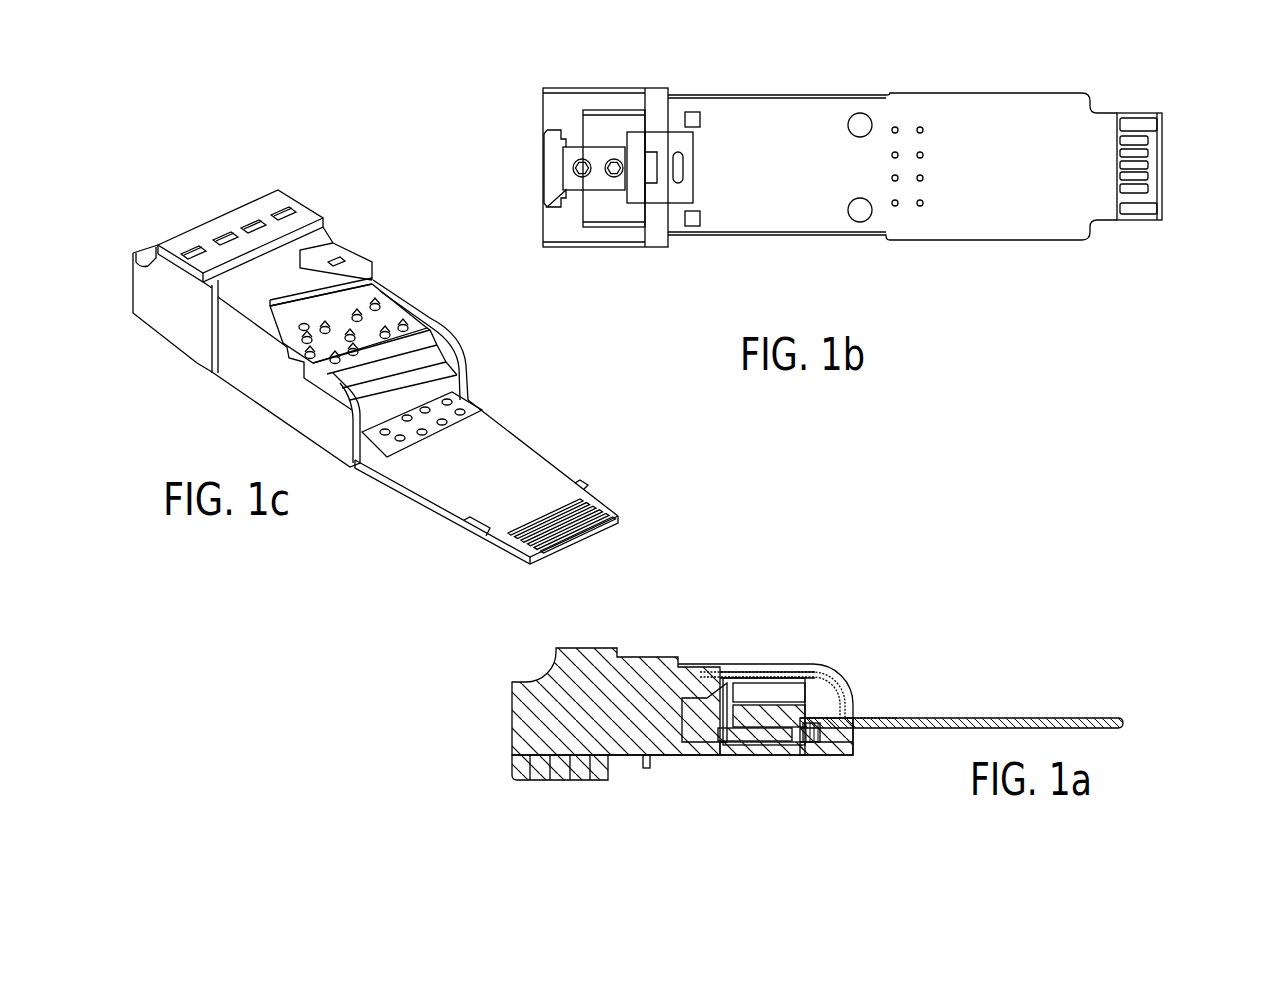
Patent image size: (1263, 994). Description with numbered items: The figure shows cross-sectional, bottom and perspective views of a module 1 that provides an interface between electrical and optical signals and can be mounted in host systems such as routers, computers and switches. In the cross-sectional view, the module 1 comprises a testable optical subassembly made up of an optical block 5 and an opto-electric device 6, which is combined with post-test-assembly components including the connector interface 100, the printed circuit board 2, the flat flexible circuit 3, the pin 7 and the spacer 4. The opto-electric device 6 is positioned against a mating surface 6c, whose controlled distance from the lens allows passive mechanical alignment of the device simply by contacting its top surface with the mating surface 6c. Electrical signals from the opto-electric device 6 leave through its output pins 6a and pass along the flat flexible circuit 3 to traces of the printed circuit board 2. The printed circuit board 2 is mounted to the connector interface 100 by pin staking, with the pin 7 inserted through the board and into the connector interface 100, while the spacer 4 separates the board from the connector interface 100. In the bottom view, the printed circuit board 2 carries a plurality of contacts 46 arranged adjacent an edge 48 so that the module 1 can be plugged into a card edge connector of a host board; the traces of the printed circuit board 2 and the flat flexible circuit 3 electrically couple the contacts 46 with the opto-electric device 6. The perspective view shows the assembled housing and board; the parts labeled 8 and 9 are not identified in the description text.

In FIG. 1A, the module 1 is at (821, 622).
In FIG. 1C, the module 1 is at (300, 328).
In FIG. 1B, the printed circuit board 2 is at (980, 242).
In FIG. 1A, the printed circuit board 2 is at (953, 718).
In FIG. 1C, the printed circuit board 2 is at (486, 478).
In FIG. 1A, the flat flexible circuit 3 is at (852, 692).
In FIG. 1A, the spacer 4 is at (832, 733).
In FIG. 1A, the optical block 5 is at (723, 703).
In FIG. 1A, the opto-electric device 6 is at (762, 690).
In FIG. 1A, the output pins 6a is at (788, 670).
In FIG. 1A, the mating surface 6c is at (752, 703).
In FIG. 1B, the pin 7 is at (862, 217).
In FIG. 1A, the pin 7 is at (838, 708).
In FIG. 1B, the latch member 8 is at (637, 193).
In FIG. 1B, the housing 9 is at (543, 223).
In FIG. 1B, the contacts 46 is at (1125, 118).
In FIG. 1B, the edge 48 is at (1178, 152).
In FIG. 1A, the connector interface 100 is at (522, 702).